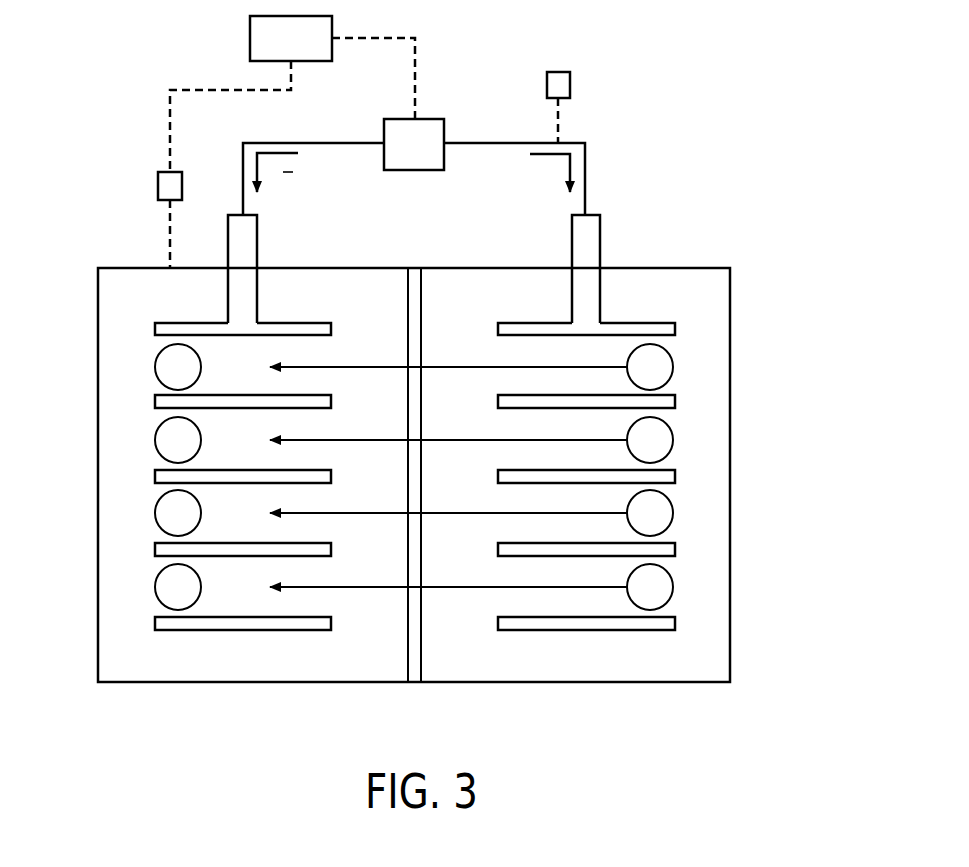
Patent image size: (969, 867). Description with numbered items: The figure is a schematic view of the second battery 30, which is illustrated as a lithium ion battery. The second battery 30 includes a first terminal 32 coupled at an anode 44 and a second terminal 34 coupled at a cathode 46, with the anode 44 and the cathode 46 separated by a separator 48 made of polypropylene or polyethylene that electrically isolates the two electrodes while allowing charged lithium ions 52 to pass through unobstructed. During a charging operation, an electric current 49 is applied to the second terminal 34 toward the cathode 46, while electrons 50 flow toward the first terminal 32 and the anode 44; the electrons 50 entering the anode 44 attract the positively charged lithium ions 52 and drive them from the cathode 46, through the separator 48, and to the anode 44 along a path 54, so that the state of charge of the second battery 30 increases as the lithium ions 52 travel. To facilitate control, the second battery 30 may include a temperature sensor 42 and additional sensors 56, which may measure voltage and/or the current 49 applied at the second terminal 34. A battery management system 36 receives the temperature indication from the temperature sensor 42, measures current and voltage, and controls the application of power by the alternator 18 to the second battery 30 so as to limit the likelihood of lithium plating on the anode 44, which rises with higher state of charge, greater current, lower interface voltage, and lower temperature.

The alternator 18 is at (427, 119).
The second battery 30 is at (742, 246).
The first terminal 32 is at (257, 243).
The second terminal 34 is at (602, 242).
The battery management system 36 is at (250, 38).
The temperature sensor 42 is at (157, 183).
The anode 44 is at (120, 366).
The cathode 46 is at (694, 412).
The separator 48 is at (413, 683).
The electric current 49 is at (550, 152).
The electrons 50 is at (278, 152).
The lithium ions 52 is at (672, 365).
The path 54 is at (455, 365).
The additional sensors 56 is at (572, 80).